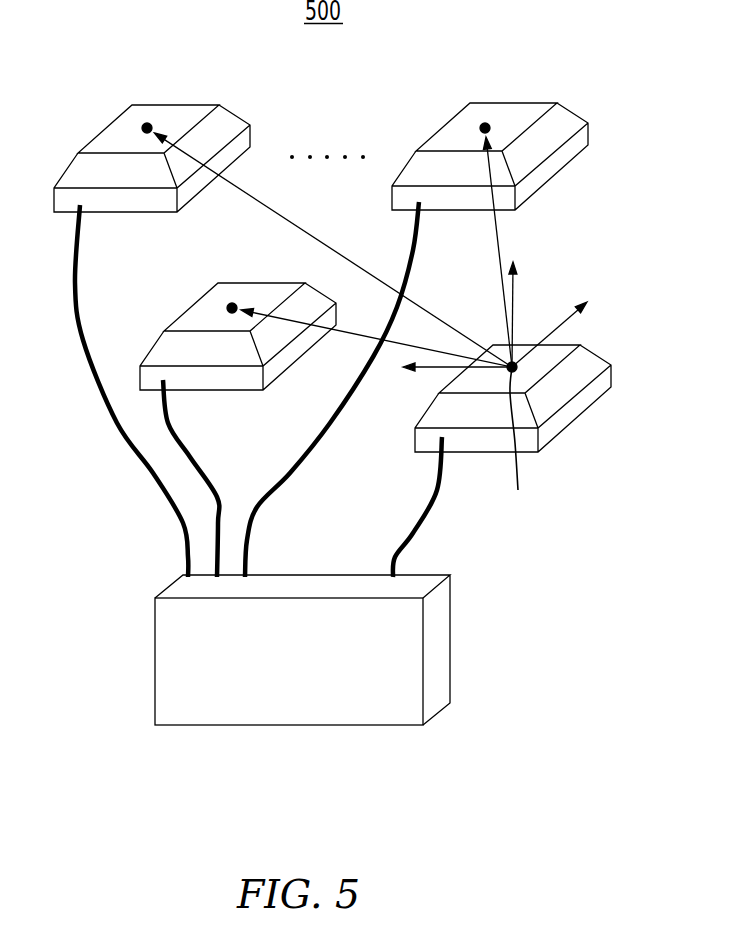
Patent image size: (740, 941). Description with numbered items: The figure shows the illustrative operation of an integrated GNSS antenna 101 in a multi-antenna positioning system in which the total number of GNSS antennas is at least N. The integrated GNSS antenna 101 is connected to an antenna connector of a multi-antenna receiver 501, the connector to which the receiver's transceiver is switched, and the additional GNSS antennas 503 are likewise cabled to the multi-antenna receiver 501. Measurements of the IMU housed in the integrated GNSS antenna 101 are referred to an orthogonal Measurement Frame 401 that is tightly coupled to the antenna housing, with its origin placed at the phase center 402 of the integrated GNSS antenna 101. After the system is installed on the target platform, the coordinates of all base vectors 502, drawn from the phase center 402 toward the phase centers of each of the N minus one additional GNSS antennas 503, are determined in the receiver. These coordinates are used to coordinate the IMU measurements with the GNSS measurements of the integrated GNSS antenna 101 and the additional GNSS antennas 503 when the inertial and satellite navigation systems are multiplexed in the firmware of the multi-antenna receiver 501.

The additional GNSS antennas 503 is at (175, 102).
The integrated GNSS antenna 101 is at (580, 416).
The base vectors 502 is at (502, 303).
The Measurement Frame 401 is at (592, 297).
The phase center 402 is at (517, 446).
The multi-antenna receiver 501 is at (283, 727).